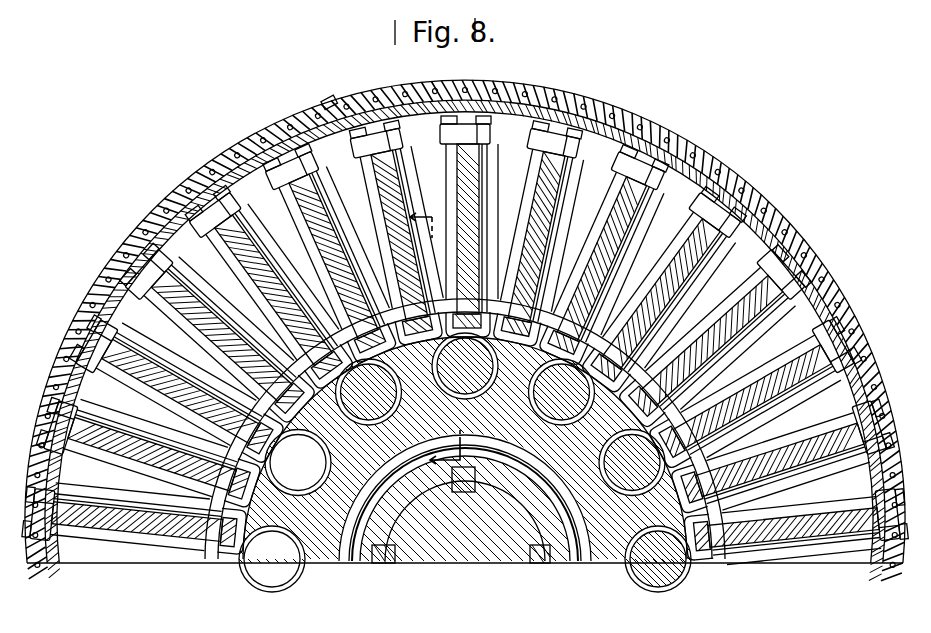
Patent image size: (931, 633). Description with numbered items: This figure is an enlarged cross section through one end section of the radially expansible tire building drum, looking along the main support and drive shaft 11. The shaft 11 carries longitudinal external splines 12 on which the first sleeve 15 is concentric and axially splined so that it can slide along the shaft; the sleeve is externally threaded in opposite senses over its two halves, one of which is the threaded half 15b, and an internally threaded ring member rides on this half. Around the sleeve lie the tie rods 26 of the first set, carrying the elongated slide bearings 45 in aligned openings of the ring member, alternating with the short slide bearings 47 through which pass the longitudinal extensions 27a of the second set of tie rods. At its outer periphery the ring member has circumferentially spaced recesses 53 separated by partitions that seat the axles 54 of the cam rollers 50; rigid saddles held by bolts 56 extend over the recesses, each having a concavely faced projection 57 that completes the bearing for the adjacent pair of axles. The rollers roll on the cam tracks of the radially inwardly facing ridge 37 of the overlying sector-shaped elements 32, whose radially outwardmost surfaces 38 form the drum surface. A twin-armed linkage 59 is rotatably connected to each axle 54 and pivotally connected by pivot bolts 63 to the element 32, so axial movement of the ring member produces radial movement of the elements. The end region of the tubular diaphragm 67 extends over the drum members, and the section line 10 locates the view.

The section line 10 is at (448, 333).
The main support and drive shaft 11 is at (430, 560).
The longitudinal external splines 12 is at (535, 563).
The first sleeve 15 is at (560, 562).
The oppositely threaded half of the first sleeve 15b is at (548, 474).
The tie rods of the first set 26 is at (640, 574).
The longitudinal extensions of the tie rods 27a is at (335, 452).
The cylindrical sector-shaped elements 32 is at (165, 212).
The ridge 37 is at (690, 130).
The radially outwardmost surface 38 is at (328, 100).
The elongated slide bearings 45 is at (400, 400).
The short slide bearing 47 is at (440, 352).
The cam rollers 50 is at (574, 362).
The recesses 53 is at (244, 492).
The axles 54 is at (185, 618).
The bolts 56 is at (178, 575).
The concavely faced projection 57 is at (738, 305).
The twin-armed linkage 59 is at (194, 186).
The pivot pins or bolts 63 is at (48, 535).
The tubular diaphragm 67 is at (112, 262).